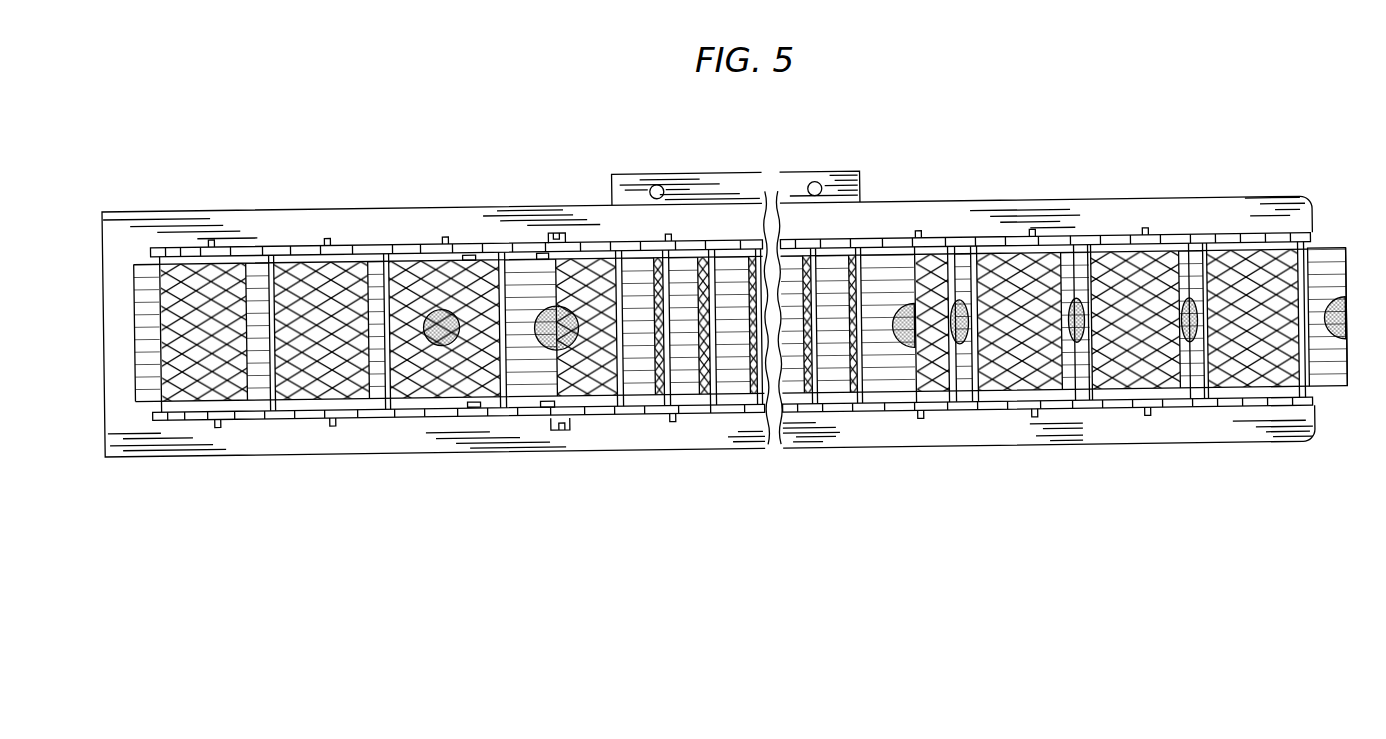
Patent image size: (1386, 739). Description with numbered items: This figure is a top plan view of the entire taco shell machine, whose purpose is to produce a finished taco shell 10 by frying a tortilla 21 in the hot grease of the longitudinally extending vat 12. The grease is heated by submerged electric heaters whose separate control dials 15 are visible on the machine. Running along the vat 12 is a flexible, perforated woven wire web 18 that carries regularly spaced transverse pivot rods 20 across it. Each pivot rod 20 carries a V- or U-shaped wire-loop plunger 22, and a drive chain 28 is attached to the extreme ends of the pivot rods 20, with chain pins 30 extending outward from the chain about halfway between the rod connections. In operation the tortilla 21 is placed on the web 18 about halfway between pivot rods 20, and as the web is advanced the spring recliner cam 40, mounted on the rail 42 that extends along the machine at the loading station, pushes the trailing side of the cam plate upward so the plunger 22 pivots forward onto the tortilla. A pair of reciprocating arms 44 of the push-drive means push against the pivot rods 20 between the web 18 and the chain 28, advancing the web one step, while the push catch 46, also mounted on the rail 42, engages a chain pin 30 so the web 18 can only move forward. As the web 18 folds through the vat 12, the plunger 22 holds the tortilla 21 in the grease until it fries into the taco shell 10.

The taco shell 10 is at (905, 330).
The vat 12 is at (727, 243).
The control dials 15 is at (655, 190).
The web 18 is at (313, 362).
The pivot rods 20 is at (167, 255).
The tortilla 21 is at (612, 513).
The plunger 22 is at (143, 263).
The drive chain 28 is at (236, 250).
The chain pins 30 is at (330, 242).
The spring recliner cam 40 is at (468, 255).
The rail 42 is at (1173, 217).
The arms 44 is at (546, 250).
The push catch 46 is at (551, 232).